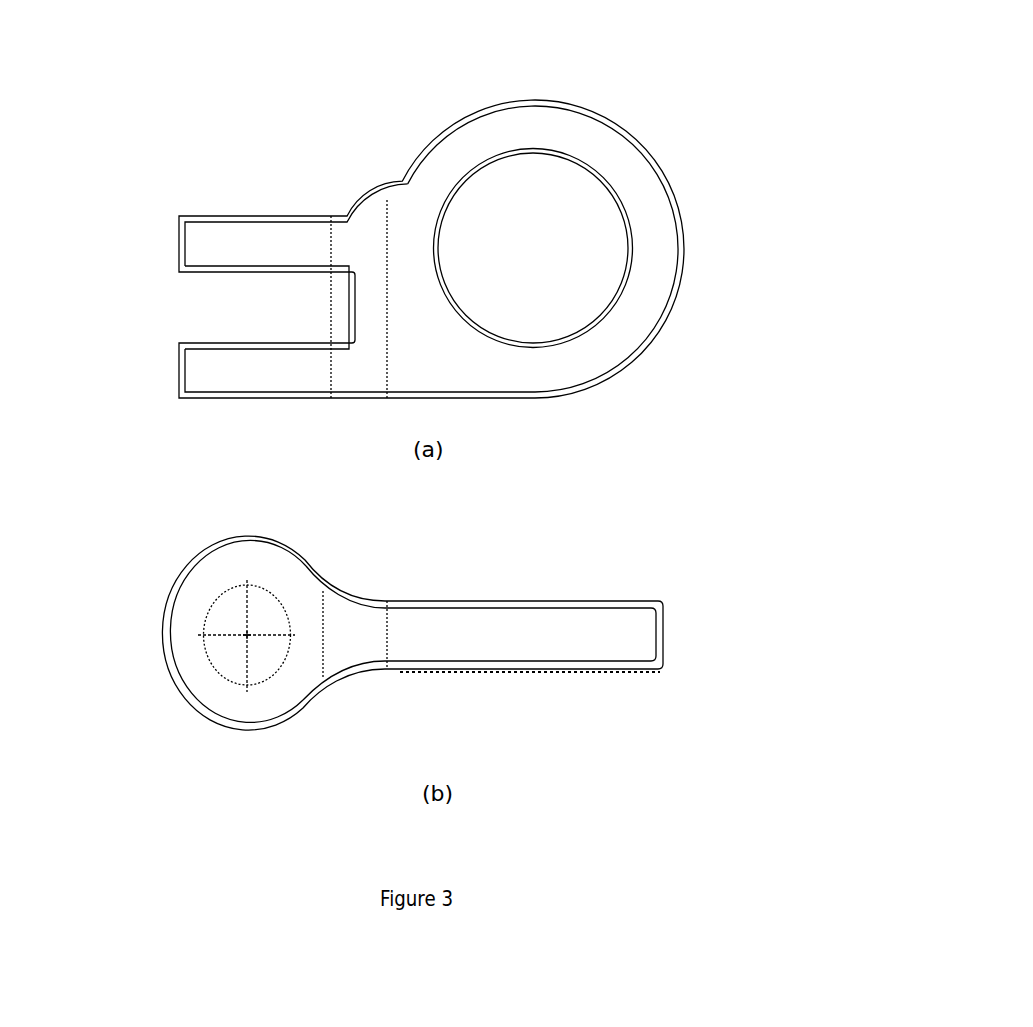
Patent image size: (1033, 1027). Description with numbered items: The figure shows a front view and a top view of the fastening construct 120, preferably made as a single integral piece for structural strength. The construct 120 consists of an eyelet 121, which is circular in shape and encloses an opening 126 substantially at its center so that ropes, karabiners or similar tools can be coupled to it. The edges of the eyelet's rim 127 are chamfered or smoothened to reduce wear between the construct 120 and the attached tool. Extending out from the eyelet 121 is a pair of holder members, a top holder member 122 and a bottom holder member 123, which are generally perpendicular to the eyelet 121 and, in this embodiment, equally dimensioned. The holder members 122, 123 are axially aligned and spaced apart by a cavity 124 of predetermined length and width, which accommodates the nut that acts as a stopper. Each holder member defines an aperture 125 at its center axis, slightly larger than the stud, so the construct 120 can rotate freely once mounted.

The construct 120 is at (630, 80).
The eyelet 121 is at (437, 168).
The top holder member 122 is at (226, 223).
The bottom holder member 123 is at (212, 382).
The cavity 124 is at (212, 314).
The aperture 125 is at (212, 630).
The opening 126 is at (540, 245).
The rim of the eyelet 127 is at (677, 234).